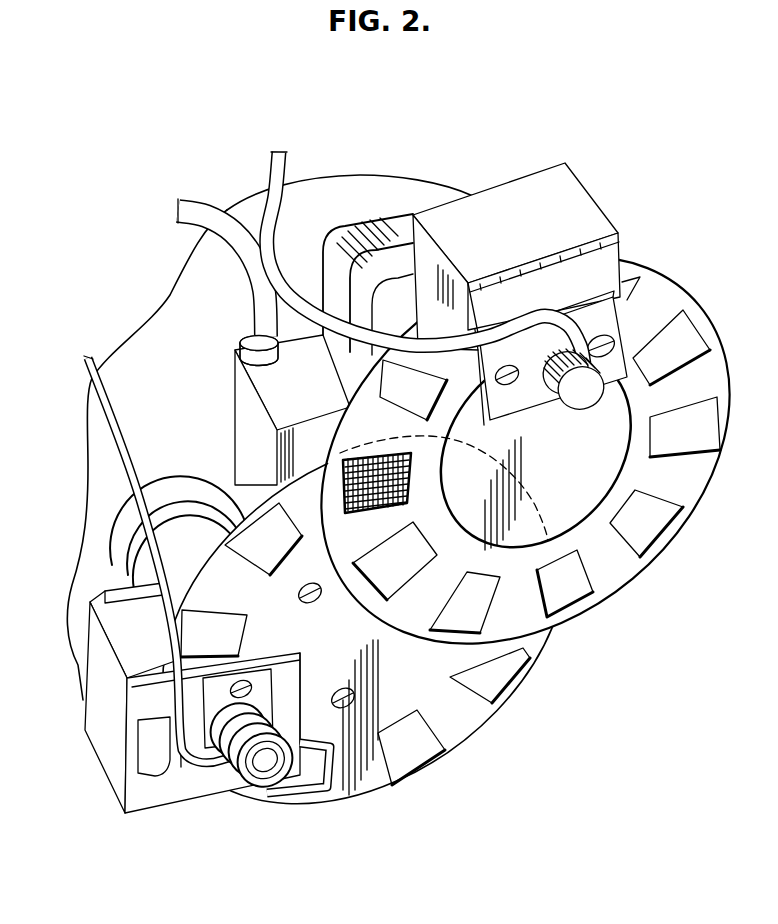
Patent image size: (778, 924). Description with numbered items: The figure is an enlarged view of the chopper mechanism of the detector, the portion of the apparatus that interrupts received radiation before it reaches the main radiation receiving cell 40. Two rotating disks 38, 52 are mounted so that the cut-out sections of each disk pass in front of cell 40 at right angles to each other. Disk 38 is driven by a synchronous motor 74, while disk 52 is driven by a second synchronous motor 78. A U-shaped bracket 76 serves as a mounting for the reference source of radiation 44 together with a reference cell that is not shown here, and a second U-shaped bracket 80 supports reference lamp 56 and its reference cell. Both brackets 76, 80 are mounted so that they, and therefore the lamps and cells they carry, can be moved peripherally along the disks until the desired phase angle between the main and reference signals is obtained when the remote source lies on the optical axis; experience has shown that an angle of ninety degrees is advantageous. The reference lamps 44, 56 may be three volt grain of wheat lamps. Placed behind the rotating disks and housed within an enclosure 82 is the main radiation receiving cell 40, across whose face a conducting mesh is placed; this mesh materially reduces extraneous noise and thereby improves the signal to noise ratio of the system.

The rotating disk 38 is at (462, 722).
The main cell 40 is at (403, 490).
The reference source of radiation 44 is at (252, 770).
The rotating disk 52 is at (619, 573).
The reference lamp 56 is at (576, 402).
The synchronous motor 74 is at (123, 548).
The U-shaped bracket 76 is at (146, 798).
The synchronous motor 78 is at (395, 222).
The U-shaped bracket 80 is at (598, 262).
The enclosure 82 is at (268, 406).